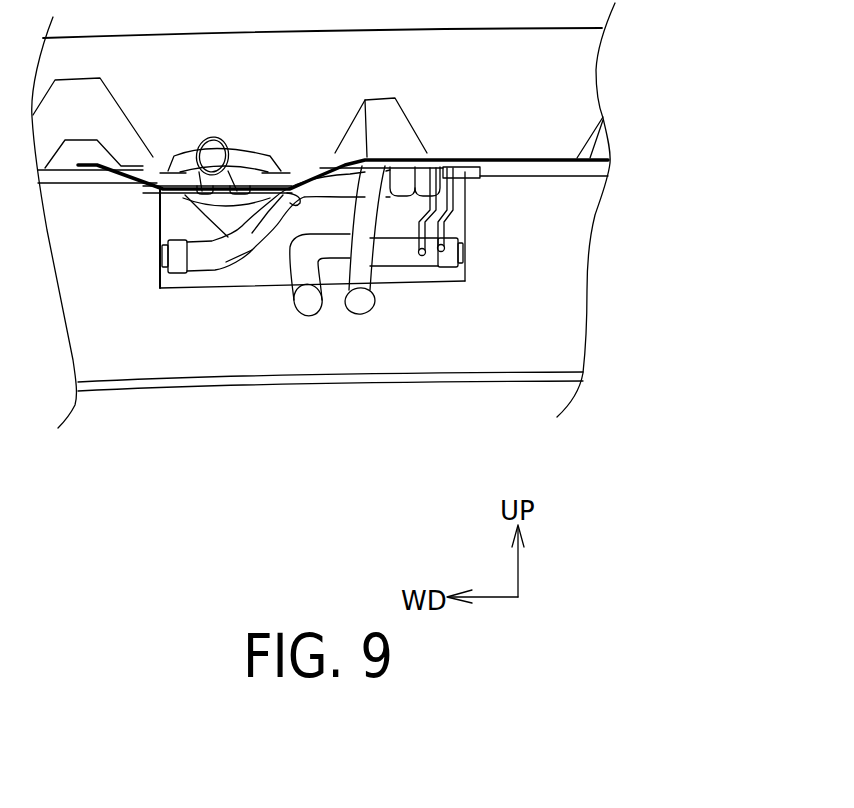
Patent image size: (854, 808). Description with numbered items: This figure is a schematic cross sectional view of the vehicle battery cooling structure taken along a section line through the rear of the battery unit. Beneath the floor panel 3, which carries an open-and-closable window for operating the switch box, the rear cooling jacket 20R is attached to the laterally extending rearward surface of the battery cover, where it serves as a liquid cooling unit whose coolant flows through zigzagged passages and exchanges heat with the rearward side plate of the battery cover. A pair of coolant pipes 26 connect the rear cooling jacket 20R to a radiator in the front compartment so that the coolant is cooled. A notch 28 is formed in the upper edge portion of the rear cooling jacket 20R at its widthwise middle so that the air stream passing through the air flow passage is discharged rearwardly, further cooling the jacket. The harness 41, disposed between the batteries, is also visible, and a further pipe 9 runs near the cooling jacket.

The floor panel 3 is at (553, 157).
The pipe 9 is at (363, 250).
The rear cooling jacket 20R is at (556, 255).
The coolant pipes 26 is at (207, 262).
The notch 28 is at (247, 275).
The harness 41 is at (208, 145).